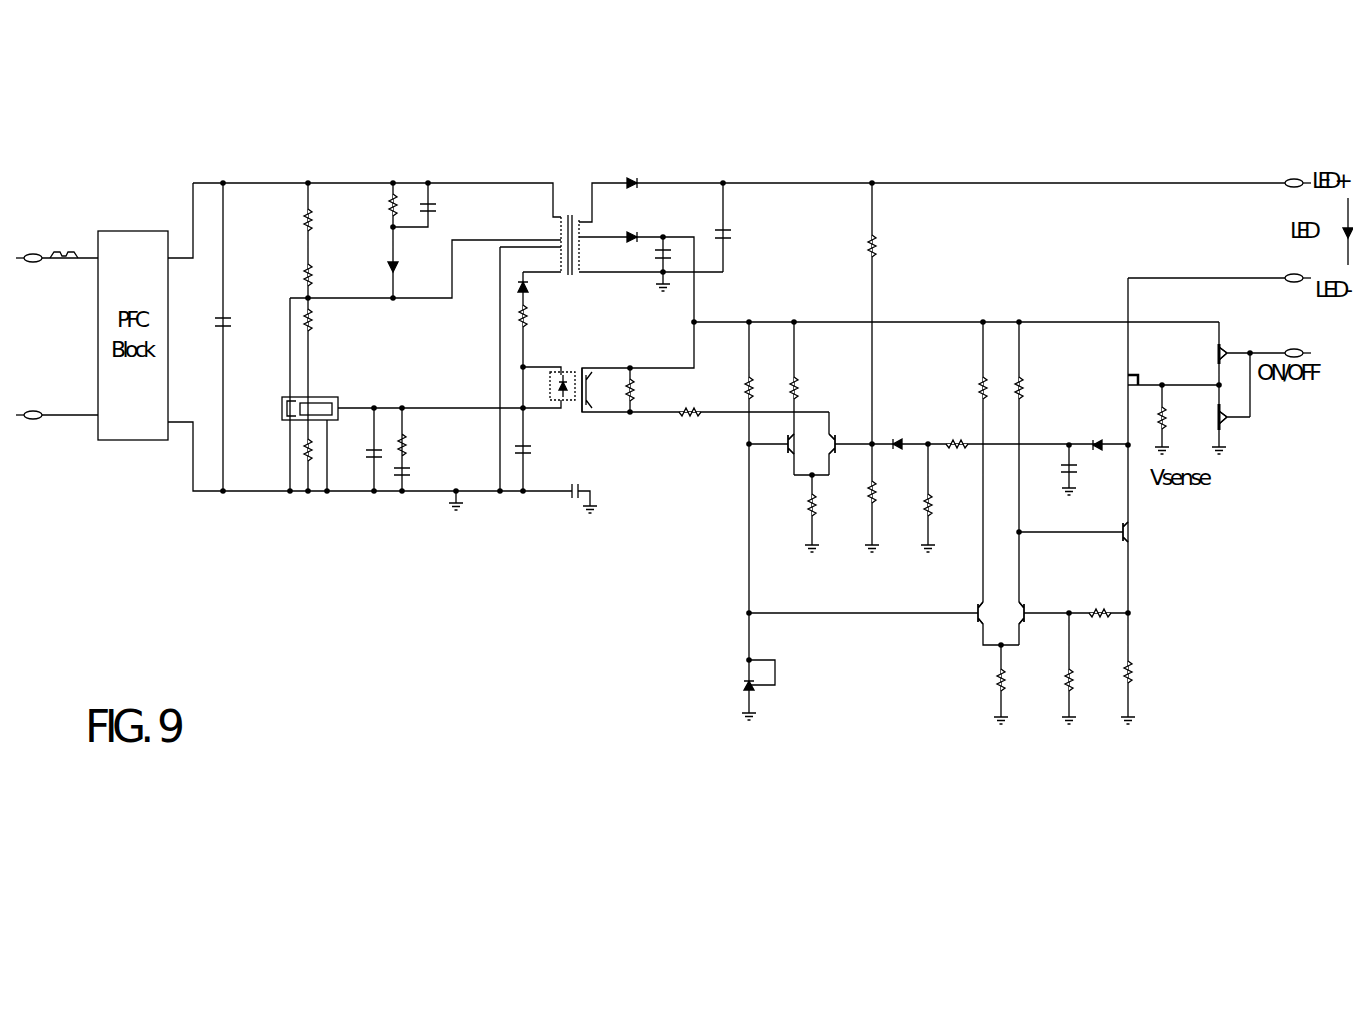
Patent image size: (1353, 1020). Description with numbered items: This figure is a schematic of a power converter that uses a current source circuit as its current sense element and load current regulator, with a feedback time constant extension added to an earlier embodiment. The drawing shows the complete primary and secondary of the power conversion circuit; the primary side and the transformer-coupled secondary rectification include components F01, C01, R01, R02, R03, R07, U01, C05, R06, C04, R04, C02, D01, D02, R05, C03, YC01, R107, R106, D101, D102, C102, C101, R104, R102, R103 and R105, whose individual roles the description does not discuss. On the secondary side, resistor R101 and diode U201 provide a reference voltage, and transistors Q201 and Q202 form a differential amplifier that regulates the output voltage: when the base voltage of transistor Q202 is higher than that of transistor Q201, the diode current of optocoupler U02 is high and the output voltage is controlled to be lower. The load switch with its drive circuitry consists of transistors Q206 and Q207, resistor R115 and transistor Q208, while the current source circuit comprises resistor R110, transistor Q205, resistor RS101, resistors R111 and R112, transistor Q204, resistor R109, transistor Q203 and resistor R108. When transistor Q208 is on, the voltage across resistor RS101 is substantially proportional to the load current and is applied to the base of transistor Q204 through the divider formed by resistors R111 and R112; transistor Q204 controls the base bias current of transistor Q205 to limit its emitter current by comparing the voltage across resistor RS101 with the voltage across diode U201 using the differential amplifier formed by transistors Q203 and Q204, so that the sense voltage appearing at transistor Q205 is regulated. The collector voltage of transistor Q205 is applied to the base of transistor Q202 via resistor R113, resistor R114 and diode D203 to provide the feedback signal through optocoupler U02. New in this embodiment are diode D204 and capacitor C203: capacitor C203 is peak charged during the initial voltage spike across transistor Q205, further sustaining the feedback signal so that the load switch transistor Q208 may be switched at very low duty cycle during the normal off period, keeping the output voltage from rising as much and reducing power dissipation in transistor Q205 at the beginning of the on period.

The fuse F01 is at (61, 239).
The capacitor C01 is at (242, 324).
The resistor R01 is at (287, 223).
The resistor R02 is at (287, 277).
The resistor R03 is at (329, 318).
The resistor R07 is at (277, 449).
The controller IC U01 is at (316, 395).
The capacitor C05 is at (357, 449).
The resistor R06 is at (425, 449).
The capacitor C04 is at (423, 475).
The resistor R04 is at (370, 207).
The capacitor C02 is at (450, 207).
The diode D01 is at (371, 265).
The diode D02 is at (524, 270).
The resistor R05 is at (546, 315).
The optocoupler U02 is at (566, 374).
The capacitor C03 is at (545, 449).
The Y capacitor YC01 is at (598, 480).
The resistor R107 is at (655, 390).
The resistor R106 is at (690, 425).
The resistor R101 is at (726, 384).
The diode D101 is at (632, 170).
The diode D102 is at (629, 223).
The capacitor C102 is at (683, 231).
The capacitor C101 is at (750, 234).
The resistor R104 is at (896, 244).
The resistor R102 is at (818, 385).
The transistor Q201 is at (775, 468).
The transistor Q202 is at (837, 468).
The resistor R103 is at (786, 511).
The resistor R105 is at (895, 486).
The diode D203 is at (899, 430).
The resistor R113 is at (952, 430).
The resistor R108 is at (958, 389).
The resistor R114 is at (953, 493).
The resistor R110 is at (1043, 389).
The diode D204 is at (1097, 433).
The capacitor C203 is at (1092, 469).
The transistor Q208 is at (1160, 370).
The resistor R115 is at (1184, 420).
The transistor Q206 is at (1245, 343).
The transistor Q207 is at (1249, 423).
The transistor Q203 is at (955, 626).
The transistor Q204 is at (1041, 626).
The transistor Q205 is at (1103, 544).
The resistor R111 is at (1102, 601).
The resistor R109 is at (1027, 683).
The resistor R112 is at (1094, 683).
The resistor RS101 is at (1159, 672).
The diode U201 is at (776, 689).